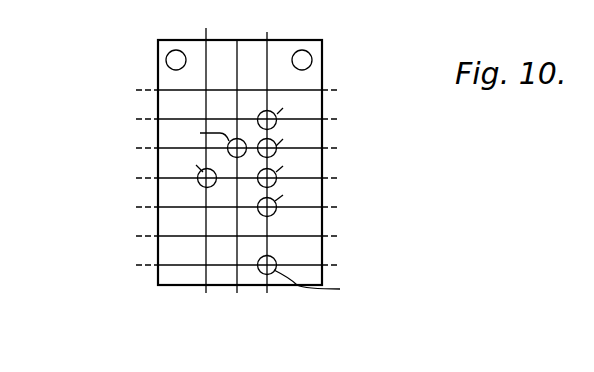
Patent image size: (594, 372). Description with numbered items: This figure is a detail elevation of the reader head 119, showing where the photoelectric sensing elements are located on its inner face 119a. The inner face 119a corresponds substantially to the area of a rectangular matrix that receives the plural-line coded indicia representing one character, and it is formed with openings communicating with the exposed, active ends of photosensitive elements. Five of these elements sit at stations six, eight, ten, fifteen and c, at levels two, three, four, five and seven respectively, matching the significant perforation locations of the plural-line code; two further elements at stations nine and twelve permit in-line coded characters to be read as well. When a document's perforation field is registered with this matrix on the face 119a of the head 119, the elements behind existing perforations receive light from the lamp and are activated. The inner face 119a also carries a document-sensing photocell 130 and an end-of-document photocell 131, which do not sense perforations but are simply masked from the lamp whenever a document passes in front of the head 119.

The head 119 is at (138, 195).
The inner face 119a is at (276, 29).
The document-sensing photocell 130 is at (172, 60).
The end-of-document photocell 131 is at (302, 58).